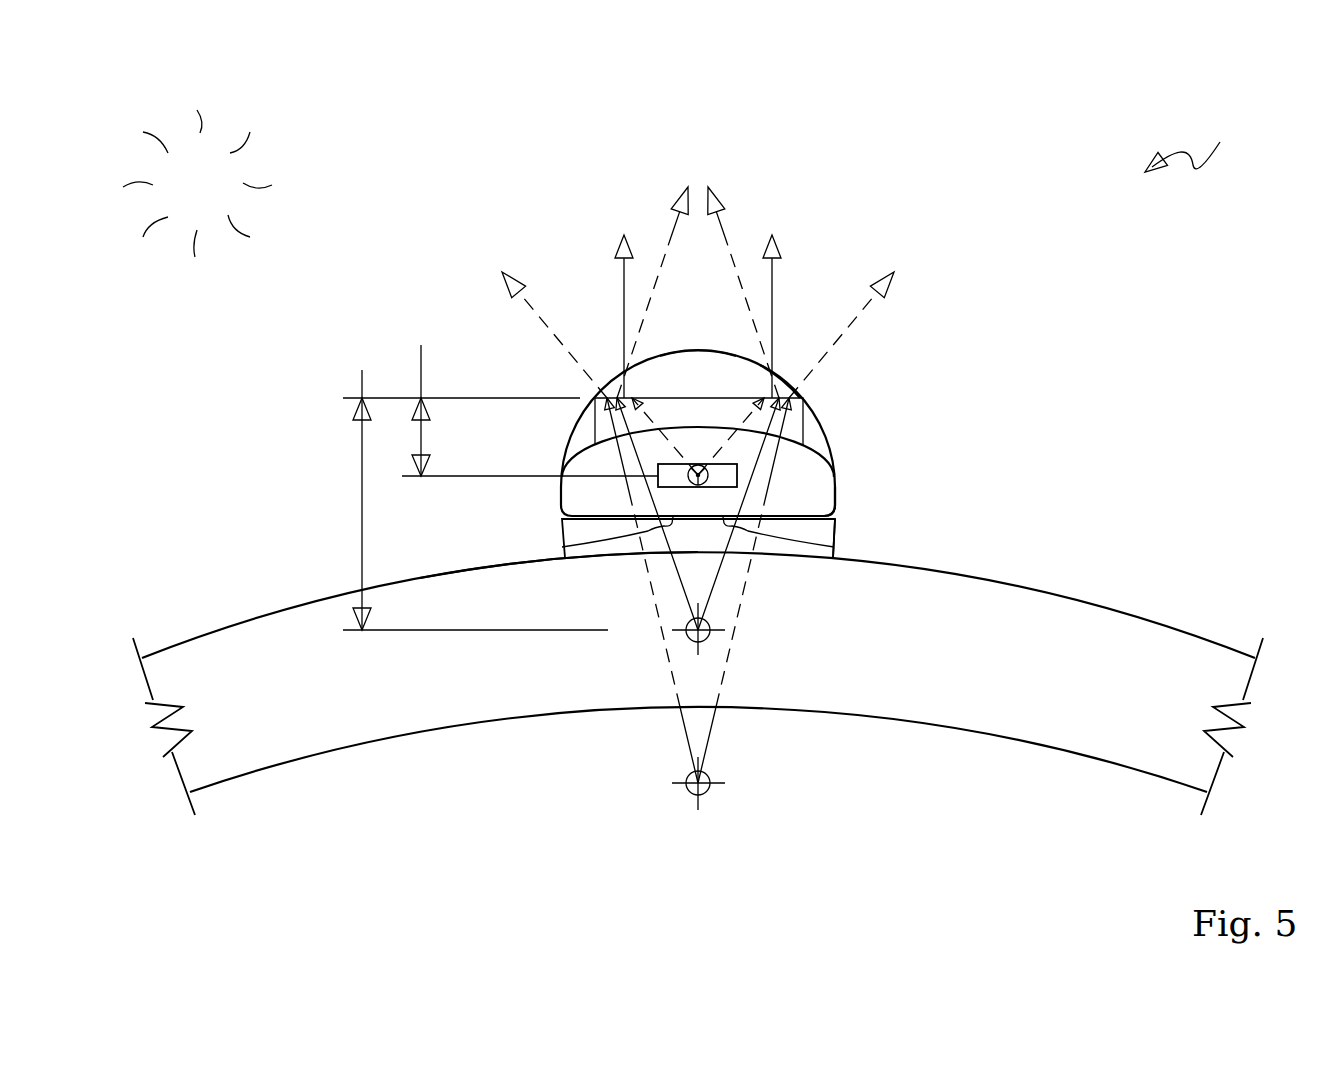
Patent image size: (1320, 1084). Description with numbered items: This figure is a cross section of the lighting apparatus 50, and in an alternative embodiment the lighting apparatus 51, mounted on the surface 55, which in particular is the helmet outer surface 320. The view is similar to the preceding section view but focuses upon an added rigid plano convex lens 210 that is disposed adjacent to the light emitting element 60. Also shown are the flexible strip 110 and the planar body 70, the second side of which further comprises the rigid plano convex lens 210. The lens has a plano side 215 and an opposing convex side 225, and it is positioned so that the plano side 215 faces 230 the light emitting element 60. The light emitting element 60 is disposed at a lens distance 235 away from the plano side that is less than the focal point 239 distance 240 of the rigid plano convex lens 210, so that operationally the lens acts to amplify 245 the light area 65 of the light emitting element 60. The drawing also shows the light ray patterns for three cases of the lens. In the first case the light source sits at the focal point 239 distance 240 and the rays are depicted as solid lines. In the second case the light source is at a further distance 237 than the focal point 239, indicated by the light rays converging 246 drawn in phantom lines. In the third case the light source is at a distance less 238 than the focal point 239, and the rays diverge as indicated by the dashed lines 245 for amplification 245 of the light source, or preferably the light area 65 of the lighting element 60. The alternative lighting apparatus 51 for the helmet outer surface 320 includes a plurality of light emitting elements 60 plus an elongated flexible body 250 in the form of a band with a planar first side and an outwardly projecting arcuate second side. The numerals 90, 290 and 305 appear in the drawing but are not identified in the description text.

The lighting apparatus 50 is at (1210, 147).
The lighting apparatus 51 is at (1210, 147).
The surface 55 is at (310, 757).
The light emitting element 60 is at (562, 546).
The light area 65 is at (698, 465).
The planar body 70 is at (562, 495).
The ambient light 90 is at (197, 183).
The flexible strip 110 is at (837, 547).
The rigid plano convex lens 210 is at (709, 366).
The plano side 215 is at (793, 428).
The convex side 225 is at (779, 385).
The faces 230 is at (738, 425).
The lens distance 235 is at (527, 402).
The further distance 237 is at (707, 790).
The distance less 238 is at (837, 530).
The focal point 239 is at (707, 643).
The focal point distance 240 is at (773, 282).
The amplification 245 is at (857, 313).
The converging light rays 246 is at (722, 228).
The elongated flexible body 250 is at (836, 498).
The sunlight 290 is at (197, 183).
The ambient radiation 305 is at (197, 183).
The helmet outer surface 320 is at (198, 637).